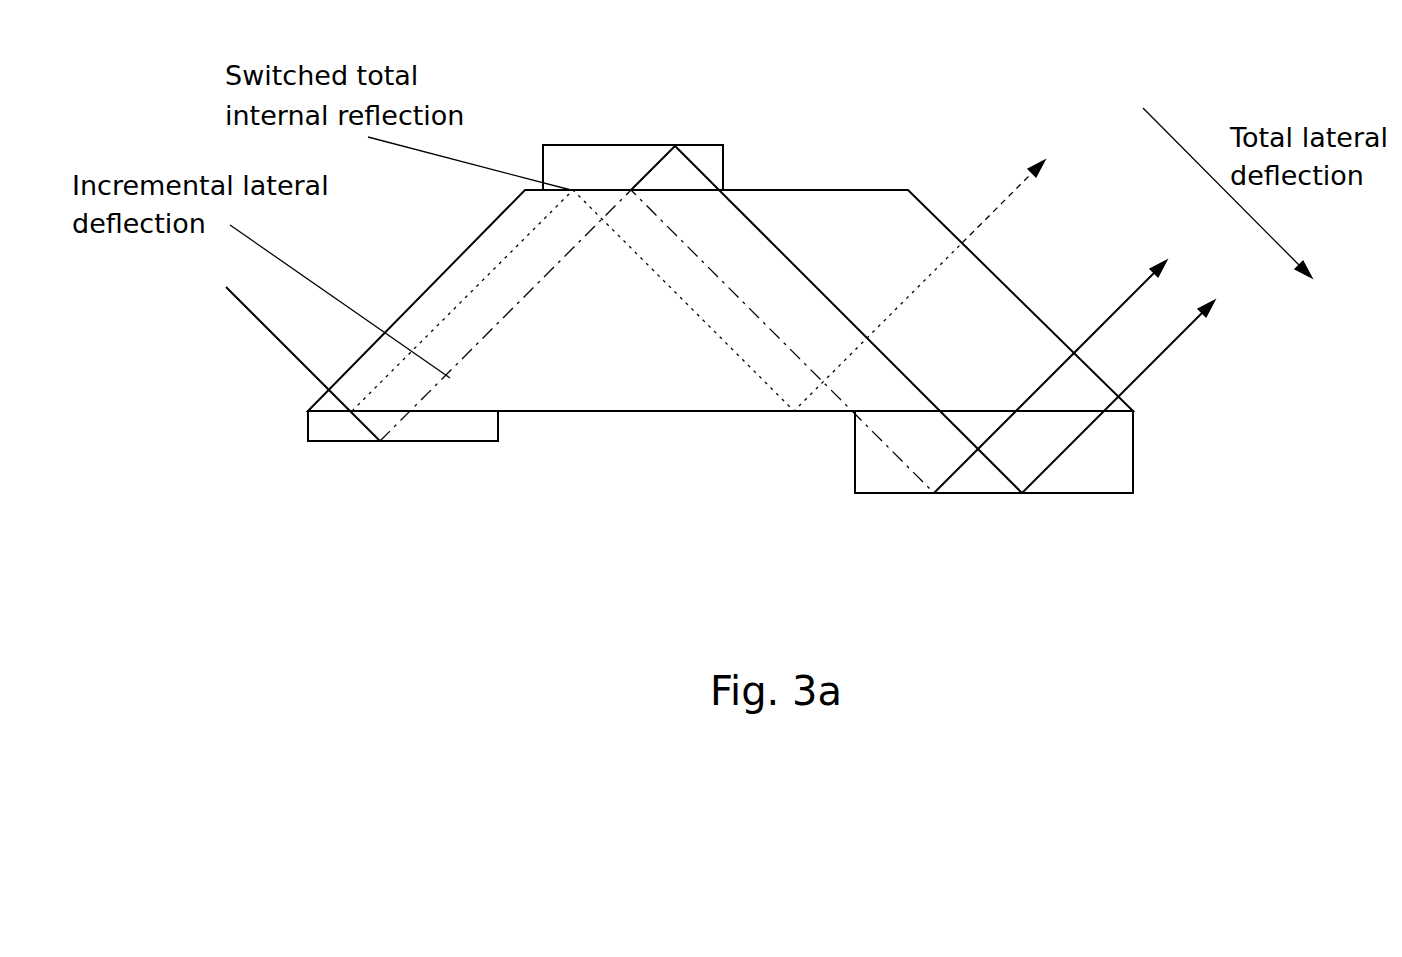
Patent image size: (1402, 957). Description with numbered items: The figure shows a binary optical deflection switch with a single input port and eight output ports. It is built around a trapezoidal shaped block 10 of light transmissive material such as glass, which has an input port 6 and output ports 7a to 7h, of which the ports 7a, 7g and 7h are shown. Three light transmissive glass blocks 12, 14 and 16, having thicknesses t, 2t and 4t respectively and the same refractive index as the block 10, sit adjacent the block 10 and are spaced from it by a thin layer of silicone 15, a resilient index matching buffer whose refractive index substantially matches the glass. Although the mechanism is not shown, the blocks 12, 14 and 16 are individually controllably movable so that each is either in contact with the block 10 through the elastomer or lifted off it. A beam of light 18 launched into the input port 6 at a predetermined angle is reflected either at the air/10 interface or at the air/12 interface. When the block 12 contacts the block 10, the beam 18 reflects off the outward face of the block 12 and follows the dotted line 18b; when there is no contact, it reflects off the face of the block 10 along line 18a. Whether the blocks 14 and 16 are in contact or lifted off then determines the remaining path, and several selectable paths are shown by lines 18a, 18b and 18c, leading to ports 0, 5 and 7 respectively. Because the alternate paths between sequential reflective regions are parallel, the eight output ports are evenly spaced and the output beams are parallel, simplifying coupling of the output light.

The trapezoidal shaped block 10 is at (582, 412).
The light transmissive glass block 12 is at (433, 442).
The light transmissive glass block 14 is at (580, 145).
The light transmissive glass block 16 is at (1065, 495).
The thin layer of silicone 15 is at (725, 188).
The beam of light 18 is at (265, 321).
The line (selectable optical path) 18a is at (530, 235).
The dotted line (selectable optical path) 18b is at (483, 342).
The line (selectable optical path) 18c is at (833, 297).
The input port 6 is at (332, 392).
The output port 0 is at (1017, 186).
The output port 5 is at (1062, 362).
The output port 7 is at (1132, 384).
The output port 7a is at (965, 237).
The output port 7g is at (1075, 353).
The output port 7h is at (1125, 392).
The thickness t is at (526, 431).
The thickness 2t is at (773, 166).
The thickness 4t is at (1162, 432).